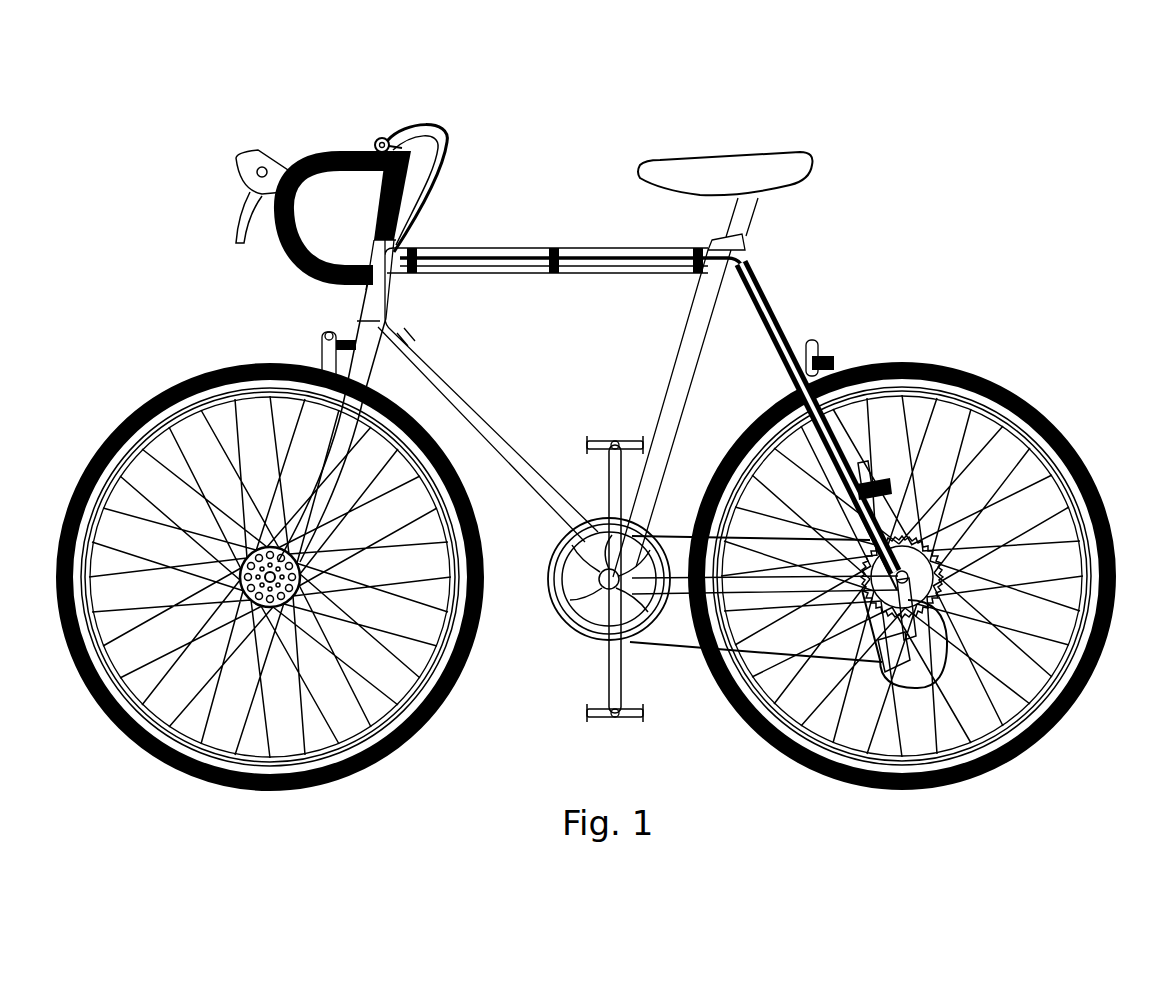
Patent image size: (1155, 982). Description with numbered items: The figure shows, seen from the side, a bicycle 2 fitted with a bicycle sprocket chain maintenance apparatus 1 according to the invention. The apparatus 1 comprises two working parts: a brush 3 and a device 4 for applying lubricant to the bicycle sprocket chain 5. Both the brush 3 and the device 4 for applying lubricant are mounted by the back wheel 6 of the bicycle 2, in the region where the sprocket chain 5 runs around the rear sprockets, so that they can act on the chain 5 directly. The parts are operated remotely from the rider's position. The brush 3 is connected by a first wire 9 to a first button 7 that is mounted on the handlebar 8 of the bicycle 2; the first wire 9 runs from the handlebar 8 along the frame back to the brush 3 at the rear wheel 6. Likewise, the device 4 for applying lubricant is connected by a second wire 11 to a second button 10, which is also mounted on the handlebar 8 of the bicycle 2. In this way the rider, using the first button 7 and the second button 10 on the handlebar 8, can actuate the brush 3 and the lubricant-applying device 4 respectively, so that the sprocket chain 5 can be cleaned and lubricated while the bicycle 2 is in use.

The bicycle sprocket chain maintenance apparatus 1 is at (1058, 720).
The bicycle 2 is at (962, 118).
The brush 3 is at (823, 777).
The device for applying lubricant 4 is at (882, 487).
The bicycle sprocket chain 5 is at (667, 647).
The back wheel 6 is at (927, 363).
The first button 7 is at (382, 138).
The handlebar 8 is at (317, 157).
The first wire 9 is at (433, 131).
The second button 10 is at (390, 137).
The second wire 11 is at (437, 180).